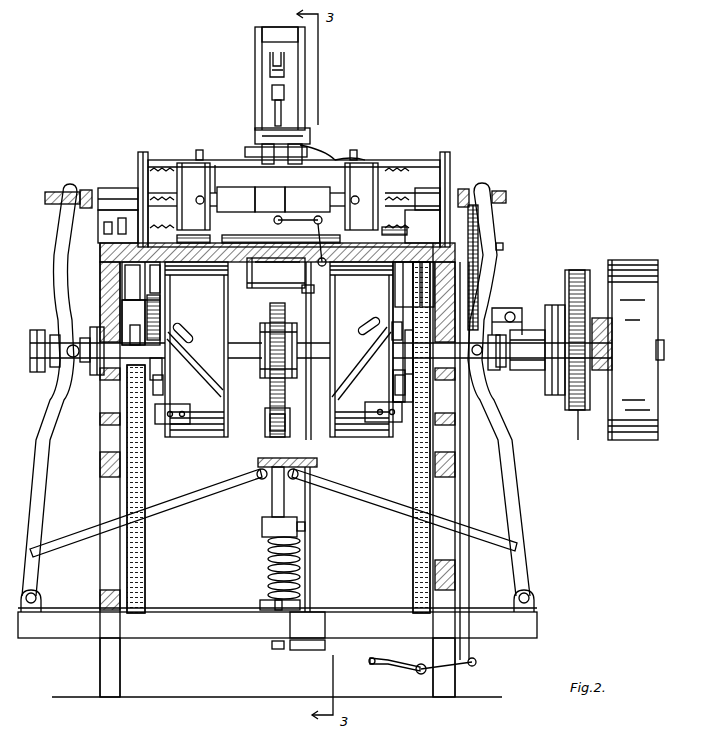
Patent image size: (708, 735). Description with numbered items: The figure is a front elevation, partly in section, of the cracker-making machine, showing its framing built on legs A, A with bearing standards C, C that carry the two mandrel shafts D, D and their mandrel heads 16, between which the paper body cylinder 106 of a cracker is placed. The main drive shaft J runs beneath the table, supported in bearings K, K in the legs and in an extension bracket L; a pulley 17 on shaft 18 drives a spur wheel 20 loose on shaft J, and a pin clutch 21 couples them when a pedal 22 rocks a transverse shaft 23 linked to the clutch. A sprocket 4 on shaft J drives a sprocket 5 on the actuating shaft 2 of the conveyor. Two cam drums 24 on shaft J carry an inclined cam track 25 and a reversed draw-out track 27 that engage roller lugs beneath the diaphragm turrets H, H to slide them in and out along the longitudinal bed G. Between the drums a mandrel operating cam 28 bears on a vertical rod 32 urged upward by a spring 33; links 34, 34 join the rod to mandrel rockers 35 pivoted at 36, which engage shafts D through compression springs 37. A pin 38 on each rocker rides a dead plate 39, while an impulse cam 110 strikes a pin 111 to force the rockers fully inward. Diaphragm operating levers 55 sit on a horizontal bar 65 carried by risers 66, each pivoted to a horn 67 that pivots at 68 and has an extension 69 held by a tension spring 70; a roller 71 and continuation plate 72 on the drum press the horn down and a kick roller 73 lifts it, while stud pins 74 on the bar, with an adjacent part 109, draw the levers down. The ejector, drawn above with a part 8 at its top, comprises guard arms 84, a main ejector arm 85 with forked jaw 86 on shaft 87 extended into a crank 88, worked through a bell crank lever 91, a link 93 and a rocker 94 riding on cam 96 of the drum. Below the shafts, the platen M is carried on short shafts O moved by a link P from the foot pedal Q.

The actuating shaft 2 is at (503, 247).
The sprocket 4 is at (485, 360).
The sprocket 5 is at (478, 238).
The cover 8 is at (255, 48).
The mandrel heads 16 is at (240, 195).
The pulley 17 is at (650, 262).
The shaft 18 is at (612, 350).
The spur wheel 20 is at (580, 432).
The pin clutch 21 is at (550, 305).
The pedal 22 is at (370, 658).
The transverse shaft 23 is at (418, 672).
The cam drums 24 is at (195, 437).
The inclined cam track 25 is at (195, 368).
The draw out cam track 27 is at (200, 278).
The mandrel operating cam 28 is at (265, 395).
The rod 32 is at (272, 500).
The spring 33 is at (268, 548).
The links 34 is at (185, 505).
The mandrel rocker 35 is at (56, 225).
The pivot 36 is at (36, 598).
The compression spring 37 is at (86, 190).
The pin 38 is at (73, 357).
The dead plate 39 is at (97, 375).
The diaphragm operating levers 55 is at (199, 150).
The horizontal bar 65 is at (216, 153).
The risers 66 is at (143, 152).
The horn 67 is at (150, 330).
The pivot 68 is at (160, 300).
The extension 69 is at (393, 380).
The tension spring 70 is at (145, 550).
The roller 71 is at (153, 385).
The continuation plate 72 is at (160, 424).
The kick roller 73 is at (160, 365).
The stud pins 74 is at (250, 150).
The guard arms 84 is at (305, 52).
The main ejector arm 85 is at (284, 95).
The forked jaw 86 is at (270, 68).
The shaft 87 is at (255, 128).
The crank 88 is at (310, 130).
The bell crank lever 91 is at (275, 220).
The link 93 is at (295, 228).
The rocker 94 is at (292, 307).
The cam 96 is at (317, 308).
The paper body cylinder 106 is at (275, 191).
The arm 109 is at (340, 158).
The impulse cam 110 is at (45, 335).
The pin 111 is at (55, 335).
The legs A is at (100, 668).
The bearing standards C is at (118, 188).
The mandrel shafts D is at (45, 198).
The longitudinal bed G is at (323, 235).
The diaphragm turrets H is at (185, 170).
The main drive shaft J is at (311, 370).
The bearings K is at (100, 310).
The extension bracket L is at (598, 318).
The platen M is at (276, 273).
The short shafts O is at (277, 270).
The link P is at (310, 540).
The foot pedal Q is at (298, 650).